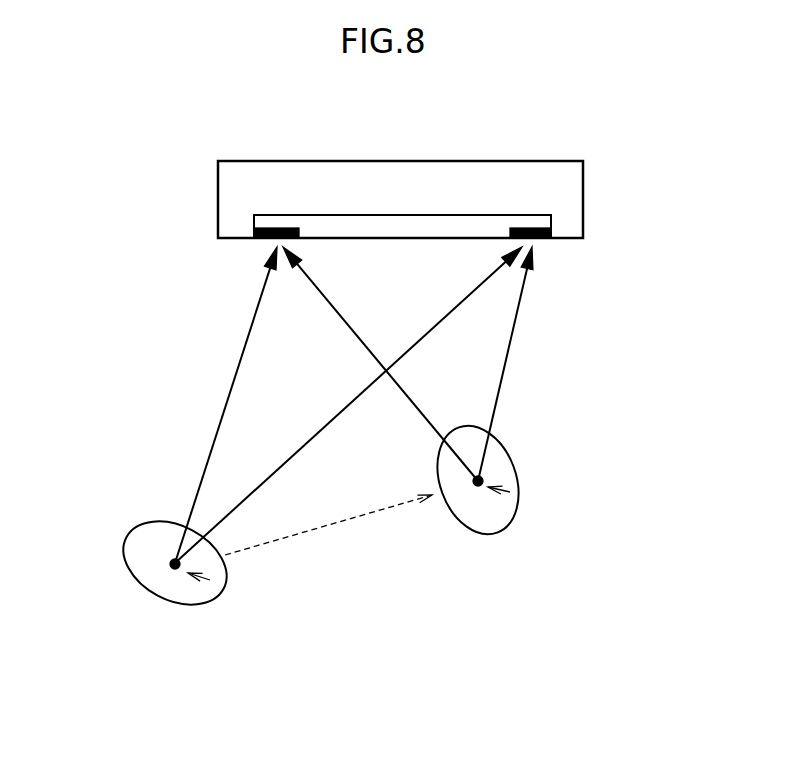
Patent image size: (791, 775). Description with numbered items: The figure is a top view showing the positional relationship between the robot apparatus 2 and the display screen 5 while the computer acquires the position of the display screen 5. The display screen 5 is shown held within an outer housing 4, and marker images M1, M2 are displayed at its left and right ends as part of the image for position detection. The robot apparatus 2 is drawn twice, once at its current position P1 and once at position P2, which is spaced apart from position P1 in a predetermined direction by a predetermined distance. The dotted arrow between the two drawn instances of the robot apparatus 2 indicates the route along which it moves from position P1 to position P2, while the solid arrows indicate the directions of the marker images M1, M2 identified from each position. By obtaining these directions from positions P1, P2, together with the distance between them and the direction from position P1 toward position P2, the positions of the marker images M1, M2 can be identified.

The robot apparatus 2 is at (130, 530).
The housing 4 is at (583, 197).
The display screen 5 is at (505, 213).
The marker image M1 is at (277, 230).
The marker image M2 is at (542, 240).
The position P1 is at (213, 593).
The position P2 is at (517, 500).